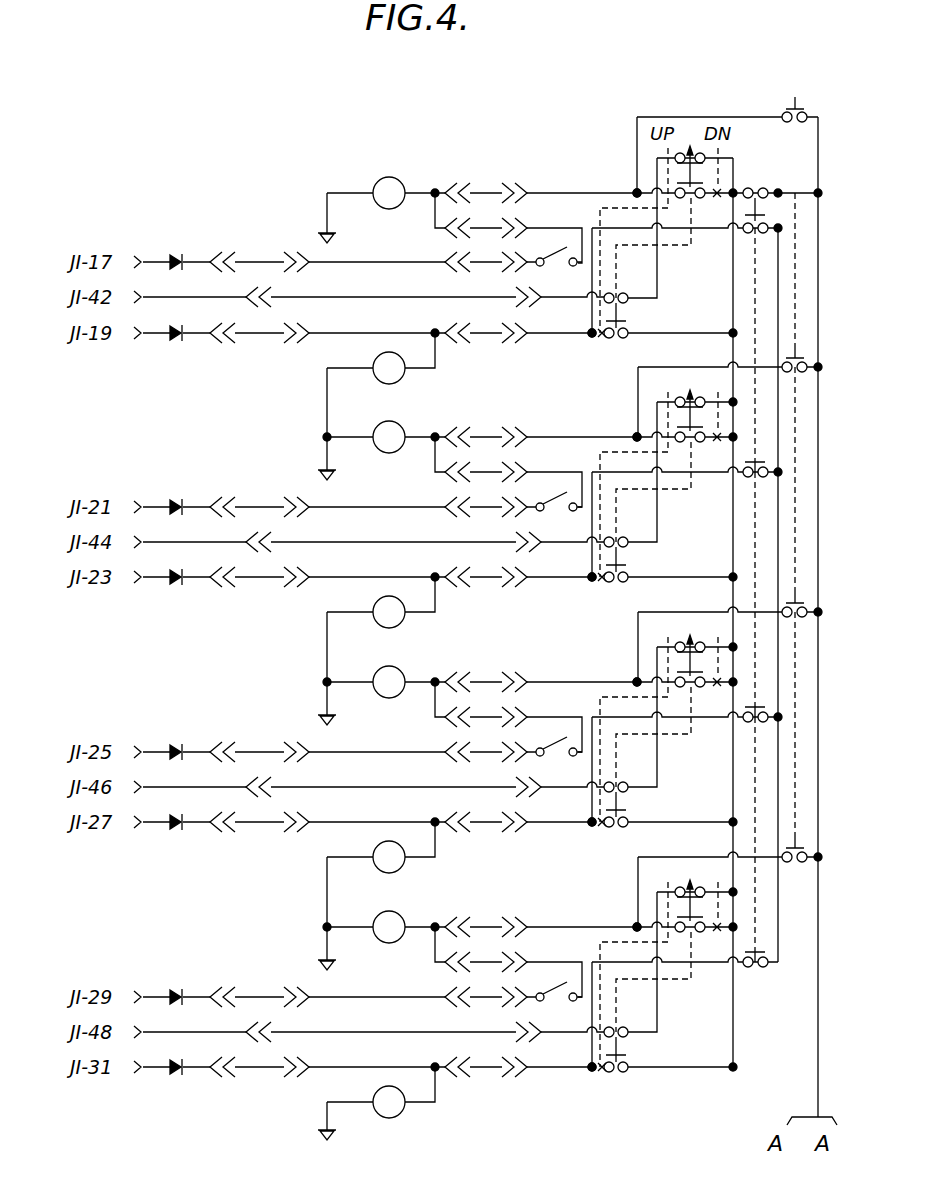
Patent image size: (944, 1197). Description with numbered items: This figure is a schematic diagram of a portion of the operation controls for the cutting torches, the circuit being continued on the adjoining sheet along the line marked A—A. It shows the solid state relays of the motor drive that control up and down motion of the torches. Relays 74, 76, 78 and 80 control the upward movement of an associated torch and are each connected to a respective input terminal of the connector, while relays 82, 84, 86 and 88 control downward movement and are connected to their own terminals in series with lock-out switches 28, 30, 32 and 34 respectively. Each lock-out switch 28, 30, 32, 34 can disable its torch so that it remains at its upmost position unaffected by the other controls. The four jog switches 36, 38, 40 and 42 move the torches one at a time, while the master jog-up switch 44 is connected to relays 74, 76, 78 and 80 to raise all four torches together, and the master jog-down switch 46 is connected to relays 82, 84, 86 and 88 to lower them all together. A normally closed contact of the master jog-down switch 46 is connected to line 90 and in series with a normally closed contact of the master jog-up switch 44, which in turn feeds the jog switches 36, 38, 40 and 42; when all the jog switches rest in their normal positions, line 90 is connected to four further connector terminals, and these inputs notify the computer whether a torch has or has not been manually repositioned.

The lock-out switch 28 is at (558, 990).
The lock-out switch 30 is at (558, 745).
The lock-out switch 32 is at (558, 500).
The lock-out switch 34 is at (558, 255).
The jog switch 36 is at (713, 965).
The jog switch 38 is at (713, 720).
The jog switch 40 is at (713, 475).
The jog switch 42 is at (713, 231).
The master jog-up switch 44 is at (751, 188).
The master jog-down switch 46 is at (795, 97).
The relay 74 is at (390, 1119).
The relay 76 is at (390, 874).
The relay 78 is at (390, 629).
The relay 80 is at (390, 385).
The relay 82 is at (390, 944).
The relay 84 is at (390, 699).
The relay 86 is at (390, 454).
The relay 88 is at (390, 210).
The line 90 is at (818, 1053).